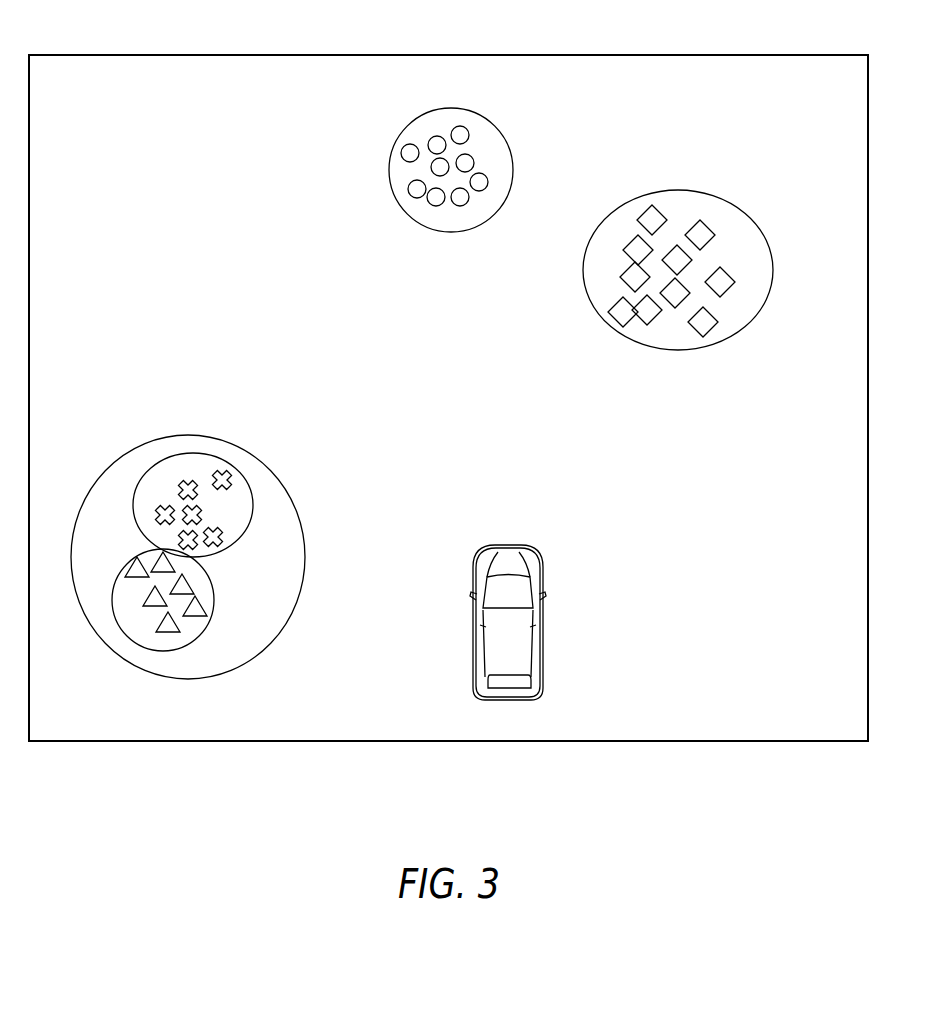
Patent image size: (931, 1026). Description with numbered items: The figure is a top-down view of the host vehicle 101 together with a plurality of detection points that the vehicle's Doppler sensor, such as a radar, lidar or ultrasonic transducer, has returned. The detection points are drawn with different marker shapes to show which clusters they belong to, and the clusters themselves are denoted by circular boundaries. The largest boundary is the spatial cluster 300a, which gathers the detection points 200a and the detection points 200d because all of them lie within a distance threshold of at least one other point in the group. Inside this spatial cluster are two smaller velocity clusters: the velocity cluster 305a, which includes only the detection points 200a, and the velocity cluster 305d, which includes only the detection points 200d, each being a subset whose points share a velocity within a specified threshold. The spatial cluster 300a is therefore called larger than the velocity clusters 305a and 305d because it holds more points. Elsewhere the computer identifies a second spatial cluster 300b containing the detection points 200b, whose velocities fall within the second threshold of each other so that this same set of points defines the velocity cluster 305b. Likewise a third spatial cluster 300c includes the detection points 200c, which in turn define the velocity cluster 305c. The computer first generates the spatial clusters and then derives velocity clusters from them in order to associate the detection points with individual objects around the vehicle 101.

The vehicle 101 is at (515, 545).
The detection points 200a is at (212, 472).
The detection points 200b is at (465, 154).
The detection points 200c is at (700, 220).
The detection points 200d is at (184, 574).
The spatial cluster 300a is at (273, 470).
The spatial cluster 300b is at (507, 157).
The spatial cluster 300c is at (716, 251).
The velocity cluster 305a is at (220, 458).
The velocity cluster 305b is at (493, 125).
The velocity cluster 305c is at (708, 194).
The velocity cluster 305d is at (200, 637).